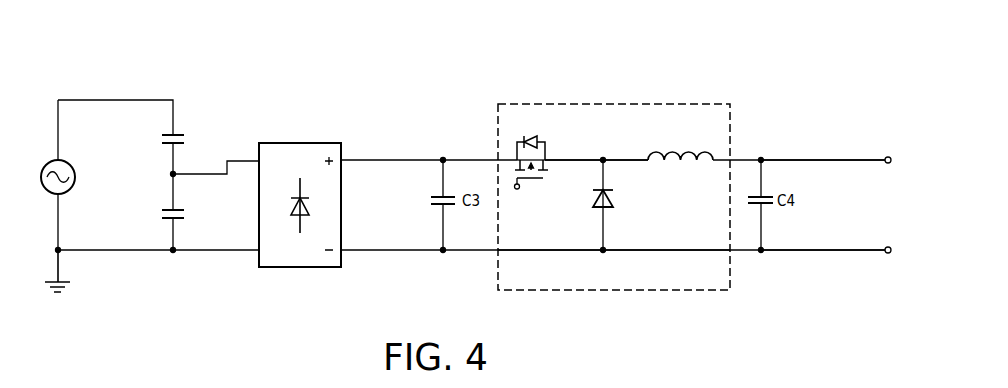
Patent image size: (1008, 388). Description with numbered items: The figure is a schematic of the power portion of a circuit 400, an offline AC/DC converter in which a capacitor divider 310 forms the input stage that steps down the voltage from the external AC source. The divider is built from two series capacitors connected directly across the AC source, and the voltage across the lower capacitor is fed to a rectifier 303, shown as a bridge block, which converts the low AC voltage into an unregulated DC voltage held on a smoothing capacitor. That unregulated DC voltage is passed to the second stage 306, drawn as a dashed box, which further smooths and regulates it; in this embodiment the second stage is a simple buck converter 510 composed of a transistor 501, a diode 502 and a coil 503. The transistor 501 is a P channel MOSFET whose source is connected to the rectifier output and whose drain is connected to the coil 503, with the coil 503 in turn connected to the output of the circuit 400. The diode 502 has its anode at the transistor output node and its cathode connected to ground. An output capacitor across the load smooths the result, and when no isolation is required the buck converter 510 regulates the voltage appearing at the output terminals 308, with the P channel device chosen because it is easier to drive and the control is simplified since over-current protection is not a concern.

The circuit 400 is at (473, 136).
The capacitor divider 310 is at (150, 146).
The rectifier 303 is at (280, 267).
The second stage 306 is at (653, 290).
The buck converter 510 is at (614, 152).
The transistor 501 is at (545, 148).
The diode 502 is at (593, 203).
The coil 503 is at (688, 163).
The output terminals 308 is at (885, 156).